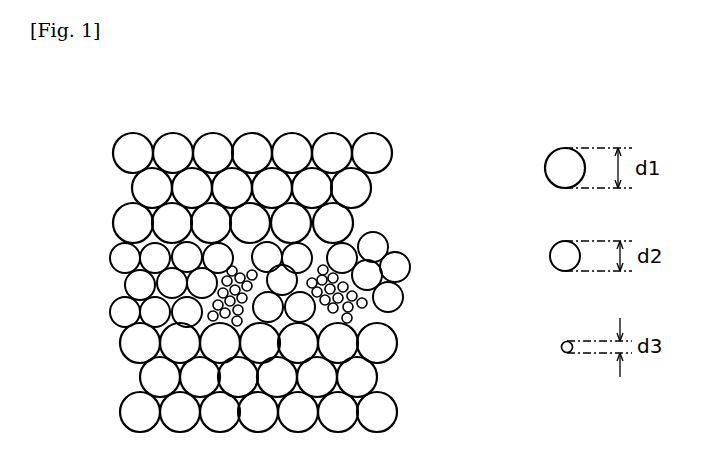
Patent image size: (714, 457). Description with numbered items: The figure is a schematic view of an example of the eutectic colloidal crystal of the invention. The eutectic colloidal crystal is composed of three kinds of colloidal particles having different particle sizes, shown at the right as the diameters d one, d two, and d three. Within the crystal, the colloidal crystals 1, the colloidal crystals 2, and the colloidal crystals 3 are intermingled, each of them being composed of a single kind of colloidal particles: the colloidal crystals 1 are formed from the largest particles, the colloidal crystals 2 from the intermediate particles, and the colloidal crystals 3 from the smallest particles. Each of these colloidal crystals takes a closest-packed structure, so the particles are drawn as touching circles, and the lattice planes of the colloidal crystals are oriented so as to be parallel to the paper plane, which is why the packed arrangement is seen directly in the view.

The colloidal crystals 1 is at (253, 135).
The colloidal crystals 2 is at (357, 283).
The colloidal crystals 3 is at (355, 287).